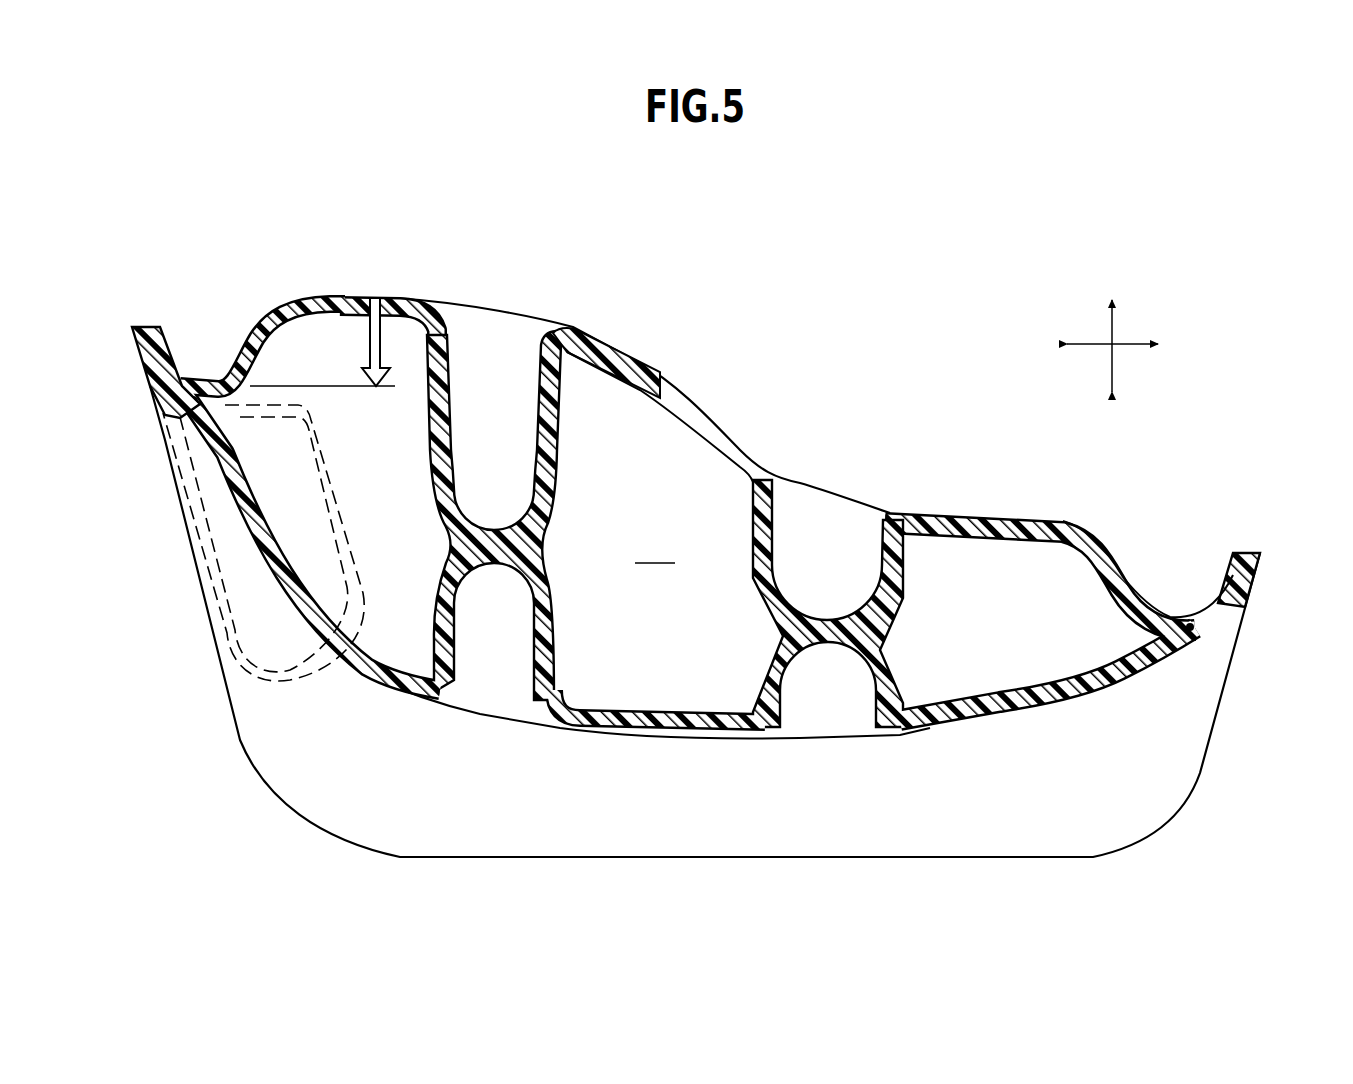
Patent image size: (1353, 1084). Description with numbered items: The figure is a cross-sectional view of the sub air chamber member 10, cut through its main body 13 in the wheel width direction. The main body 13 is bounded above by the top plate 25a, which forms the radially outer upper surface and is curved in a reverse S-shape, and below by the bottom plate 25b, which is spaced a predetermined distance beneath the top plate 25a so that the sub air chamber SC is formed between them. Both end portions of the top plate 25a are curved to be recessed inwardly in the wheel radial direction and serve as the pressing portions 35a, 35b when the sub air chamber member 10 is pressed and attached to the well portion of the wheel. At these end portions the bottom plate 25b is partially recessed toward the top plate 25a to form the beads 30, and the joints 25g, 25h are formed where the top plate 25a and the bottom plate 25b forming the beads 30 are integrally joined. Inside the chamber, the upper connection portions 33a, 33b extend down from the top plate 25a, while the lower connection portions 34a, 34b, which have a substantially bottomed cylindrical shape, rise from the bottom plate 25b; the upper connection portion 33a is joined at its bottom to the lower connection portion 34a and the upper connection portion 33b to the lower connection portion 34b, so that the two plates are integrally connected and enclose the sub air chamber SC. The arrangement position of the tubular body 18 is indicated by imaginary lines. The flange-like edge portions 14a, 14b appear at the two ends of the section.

The sub air chamber member 10 is at (701, 572).
The main body 13 is at (670, 380).
The flange portion 14a is at (1253, 568).
The flange portion 14b is at (150, 353).
The tubular body 18 is at (340, 497).
The top plate 25a is at (580, 340).
The bottom plate 25b is at (662, 735).
The joint 25g is at (1190, 630).
The joint 25h is at (193, 404).
The bead 30 is at (347, 803).
The upper connection portion 33a is at (448, 378).
The upper connection portion 33b is at (880, 574).
The lower connection portion 34a is at (497, 700).
The lower connection portion 34b is at (873, 687).
The pressing portion 35a is at (1186, 578).
The pressing portion 35b is at (196, 357).